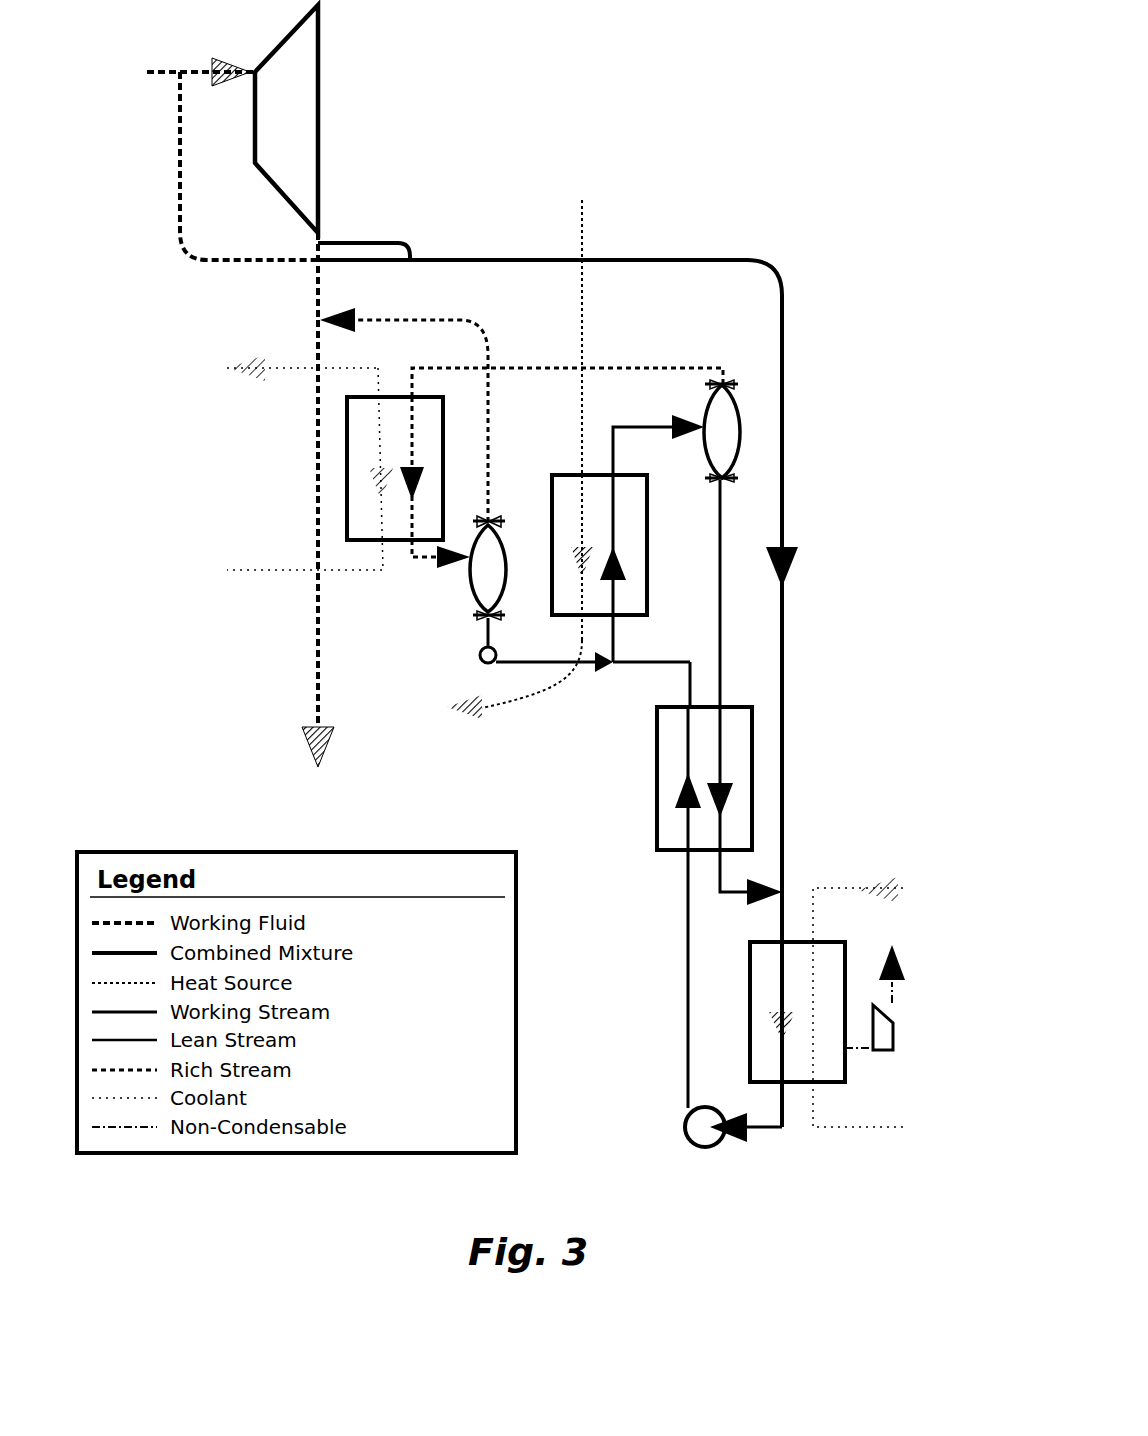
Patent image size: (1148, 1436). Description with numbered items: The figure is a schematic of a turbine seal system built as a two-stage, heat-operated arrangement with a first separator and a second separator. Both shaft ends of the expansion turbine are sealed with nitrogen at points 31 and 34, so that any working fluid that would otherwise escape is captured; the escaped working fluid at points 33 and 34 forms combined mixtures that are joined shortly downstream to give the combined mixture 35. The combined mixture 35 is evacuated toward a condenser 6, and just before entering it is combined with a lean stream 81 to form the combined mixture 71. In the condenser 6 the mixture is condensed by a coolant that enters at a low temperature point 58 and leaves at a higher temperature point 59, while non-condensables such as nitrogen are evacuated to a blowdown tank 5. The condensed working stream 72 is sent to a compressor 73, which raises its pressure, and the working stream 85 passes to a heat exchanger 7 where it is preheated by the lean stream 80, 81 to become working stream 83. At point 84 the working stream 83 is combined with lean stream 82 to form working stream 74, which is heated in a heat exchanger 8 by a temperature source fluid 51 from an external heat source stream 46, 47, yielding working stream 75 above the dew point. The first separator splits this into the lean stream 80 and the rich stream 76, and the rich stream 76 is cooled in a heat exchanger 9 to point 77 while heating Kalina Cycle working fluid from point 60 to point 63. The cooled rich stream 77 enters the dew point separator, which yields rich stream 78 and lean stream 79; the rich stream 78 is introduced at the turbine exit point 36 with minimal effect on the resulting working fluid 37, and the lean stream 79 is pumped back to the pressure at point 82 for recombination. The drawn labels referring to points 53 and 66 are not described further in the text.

The blowdown tank 5 is at (879, 983).
The condenser 6 is at (797, 1012).
The heat exchanger 7 is at (704, 778).
The heat exchanger 8 is at (599, 545).
The heat exchanger 9 is at (395, 468).
The expansion turbine inlet seal point 31 is at (281, 119).
The combined mixture point 33 is at (249, 166).
The combined mixture point 34 is at (364, 236).
The combined mixture 35 is at (569, 693).
The spent stream point 36 is at (296, 276).
The working fluid 37 is at (304, 543).
The external heat source stream inlet 46 is at (566, 540).
The external heat source stream outlet 47 is at (514, 691).
The temperature source fluid 51 is at (576, 322).
The heat source stream destination 53 is at (411, 717).
The coolant 58 is at (860, 1104).
The coolant 59 is at (858, 979).
The Kalina Cycle working fluid 60 is at (310, 488).
The Kalina Cycle working fluid 63 is at (404, 415).
The coolant stream destination 66 is at (262, 371).
The combined mixture 71 is at (766, 923).
The working stream 72 is at (746, 1117).
The compressor 73 is at (686, 1117).
The working stream 74 is at (624, 604).
The working stream 75 is at (658, 487).
The rich stream 76 is at (570, 453).
The rich stream 77 is at (453, 572).
The rich stream 78 is at (499, 463).
The lean stream 79 is at (469, 640).
The lean stream 80 is at (700, 593).
The lean stream 81 is at (744, 806).
The lean stream 82 is at (554, 655).
The working stream 83 is at (668, 684).
The mixing point 84 is at (634, 682).
The working stream 85 is at (674, 907).